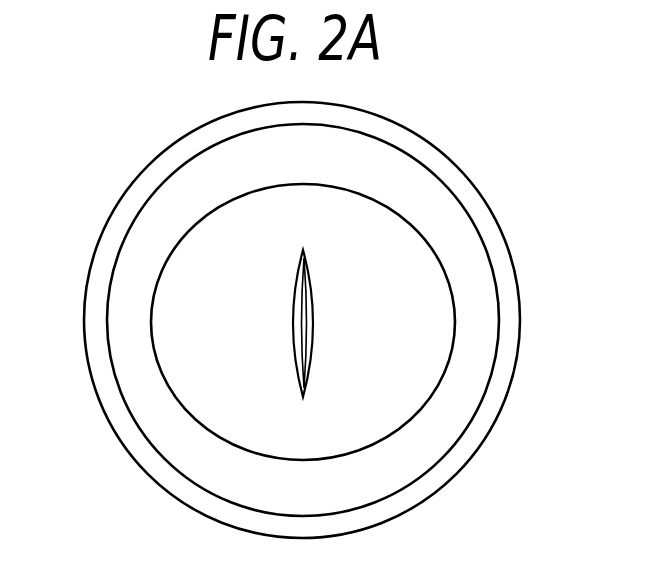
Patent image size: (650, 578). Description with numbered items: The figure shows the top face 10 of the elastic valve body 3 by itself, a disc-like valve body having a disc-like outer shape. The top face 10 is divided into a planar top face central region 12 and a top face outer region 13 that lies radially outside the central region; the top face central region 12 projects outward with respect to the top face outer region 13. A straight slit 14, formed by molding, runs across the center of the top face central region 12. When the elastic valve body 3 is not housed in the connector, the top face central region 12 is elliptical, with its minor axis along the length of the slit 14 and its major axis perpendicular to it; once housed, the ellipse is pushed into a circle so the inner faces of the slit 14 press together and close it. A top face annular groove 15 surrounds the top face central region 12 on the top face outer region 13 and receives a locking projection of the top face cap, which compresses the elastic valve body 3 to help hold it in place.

The elastic valve body 3 is at (458, 142).
The top face 10 is at (276, 312).
The top face central region 12 is at (228, 237).
The top face outer region 13 is at (145, 197).
The slit 14 is at (300, 315).
The top face annular groove 15 is at (160, 413).